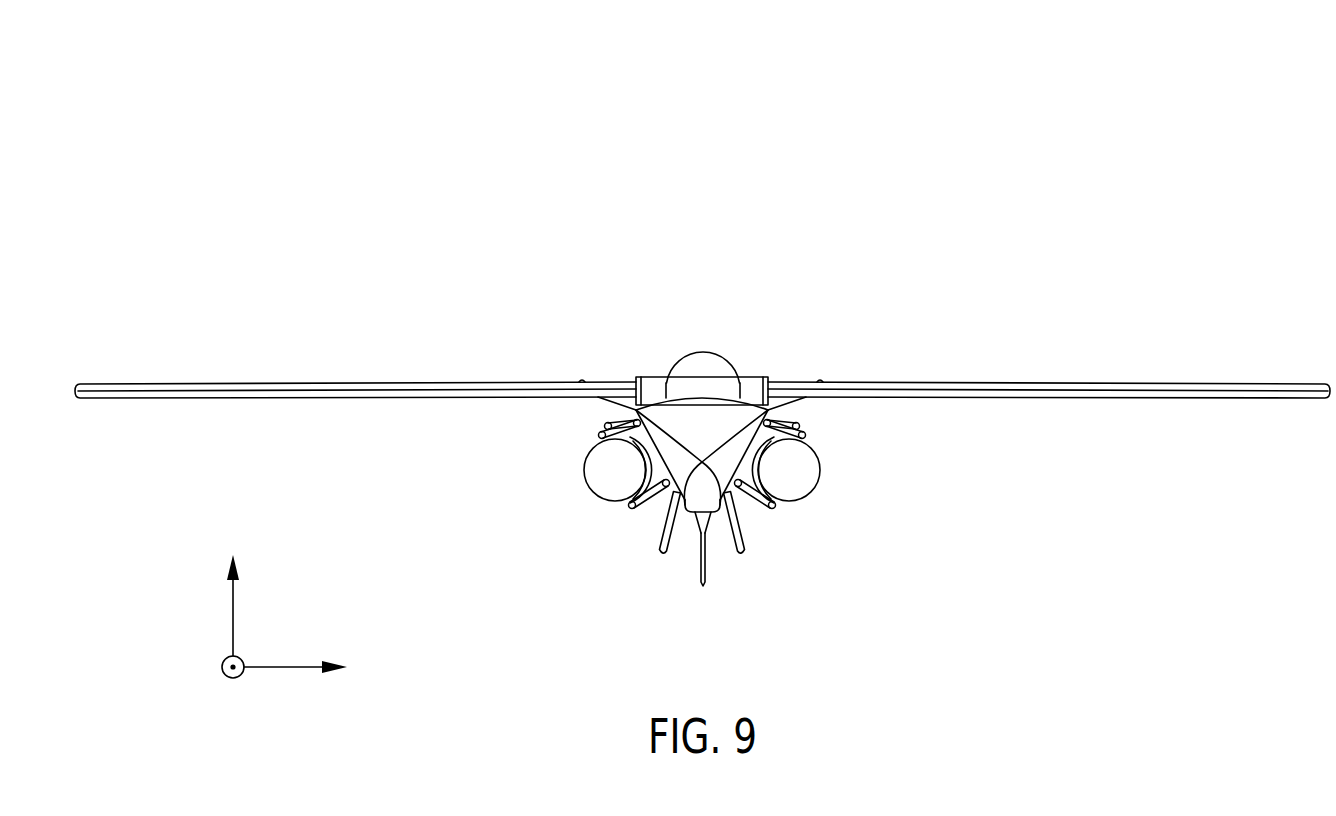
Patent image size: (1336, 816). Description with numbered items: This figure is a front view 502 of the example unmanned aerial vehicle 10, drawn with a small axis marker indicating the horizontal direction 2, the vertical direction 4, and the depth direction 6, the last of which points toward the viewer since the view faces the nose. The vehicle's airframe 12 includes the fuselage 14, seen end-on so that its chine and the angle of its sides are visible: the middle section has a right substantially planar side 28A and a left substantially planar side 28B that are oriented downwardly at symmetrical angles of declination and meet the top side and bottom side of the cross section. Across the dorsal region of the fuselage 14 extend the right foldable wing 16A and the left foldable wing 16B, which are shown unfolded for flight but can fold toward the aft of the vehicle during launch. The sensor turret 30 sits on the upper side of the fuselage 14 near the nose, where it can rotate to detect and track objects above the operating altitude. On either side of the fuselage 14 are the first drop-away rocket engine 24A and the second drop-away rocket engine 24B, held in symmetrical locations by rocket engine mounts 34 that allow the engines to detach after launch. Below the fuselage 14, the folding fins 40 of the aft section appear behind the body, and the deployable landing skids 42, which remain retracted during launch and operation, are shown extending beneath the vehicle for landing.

The front view 502 is at (128, 114).
The unmanned aerial vehicle 10 is at (160, 285).
The airframe 12 is at (533, 336).
The right foldable wing 16A is at (303, 383).
The left foldable wing 16B is at (1108, 383).
The sensor turret 30 is at (700, 352).
The fuselage 14 is at (758, 384).
The rocket engine mounts 34 is at (800, 432).
The first drop-away rocket engine 24A is at (590, 488).
The second drop-away rocket engine 24B is at (822, 468).
The right substantially planar side 28A is at (652, 500).
The left substantially planar side 28B is at (765, 495).
The folding fins 40 is at (708, 572).
The deployable landing skids 42 is at (676, 540).
The horizontal direction 2 is at (285, 667).
The vertical direction 4 is at (233, 617).
The depth direction 6 is at (221, 667).